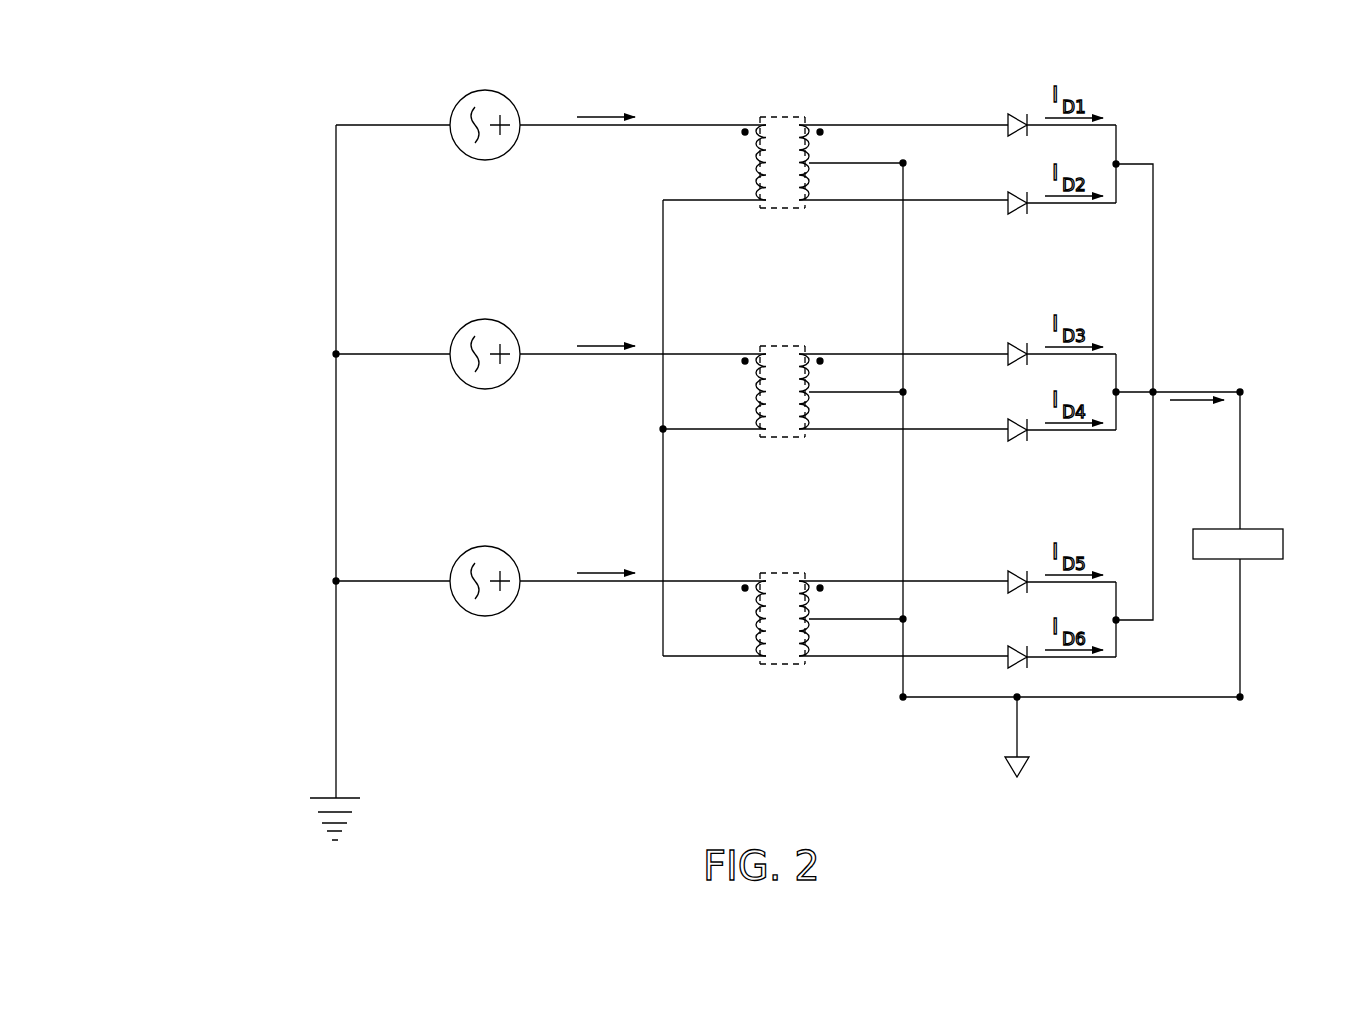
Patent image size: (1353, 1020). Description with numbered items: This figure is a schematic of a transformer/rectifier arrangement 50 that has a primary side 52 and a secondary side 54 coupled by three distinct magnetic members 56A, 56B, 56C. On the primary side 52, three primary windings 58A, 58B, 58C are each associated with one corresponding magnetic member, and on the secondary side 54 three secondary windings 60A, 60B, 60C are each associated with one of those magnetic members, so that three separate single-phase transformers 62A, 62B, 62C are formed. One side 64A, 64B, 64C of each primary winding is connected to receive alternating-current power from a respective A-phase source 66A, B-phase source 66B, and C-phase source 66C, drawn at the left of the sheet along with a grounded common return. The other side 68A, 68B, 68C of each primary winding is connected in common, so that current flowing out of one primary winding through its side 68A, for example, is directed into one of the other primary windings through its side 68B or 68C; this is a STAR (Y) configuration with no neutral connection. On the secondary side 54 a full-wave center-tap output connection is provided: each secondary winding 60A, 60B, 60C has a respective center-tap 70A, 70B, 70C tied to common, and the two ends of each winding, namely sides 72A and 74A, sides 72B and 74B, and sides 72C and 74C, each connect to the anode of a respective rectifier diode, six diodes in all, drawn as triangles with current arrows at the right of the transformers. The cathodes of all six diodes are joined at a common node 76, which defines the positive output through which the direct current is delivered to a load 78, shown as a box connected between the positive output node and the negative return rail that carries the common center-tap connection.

The transformer/rectifier arrangement 50 is at (280, 133).
The primary side 52 is at (610, 676).
The secondary side 54 is at (850, 730).
The magnetic member 56A is at (781, 116).
The magnetic member 56B is at (781, 345).
The magnetic member 56C is at (781, 572).
The primary winding 58A is at (717, 166).
The primary winding 58B is at (717, 395).
The primary winding 58C is at (717, 622).
The secondary winding 60A is at (840, 182).
The secondary winding 60B is at (840, 411).
The secondary winding 60C is at (840, 638).
The single-phase transformer 62A is at (765, 110).
The single-phase transformer 62B is at (765, 339).
The single-phase transformer 62C is at (765, 566).
The side of primary winding 64A is at (758, 126).
The side of primary winding 64B is at (758, 355).
The side of primary winding 64C is at (758, 582).
The A-phase source 66A is at (486, 90).
The B-phase source 66B is at (486, 319).
The C-phase source 66C is at (486, 546).
The other side of primary winding 68A is at (754, 200).
The other side of primary winding 68B is at (754, 429).
The other side of primary winding 68C is at (754, 656).
The center-tap 70A is at (880, 163).
The center-tap 70B is at (880, 392).
The center-tap 70C is at (880, 619).
The side of secondary winding 72A is at (806, 126).
The side of secondary winding 72B is at (806, 355).
The side of secondary winding 72C is at (806, 582).
The side of secondary winding 74A is at (813, 205).
The side of secondary winding 74B is at (813, 434).
The side of secondary winding 74C is at (813, 661).
The common node 76 is at (1244, 385).
The load 78 is at (1283, 548).